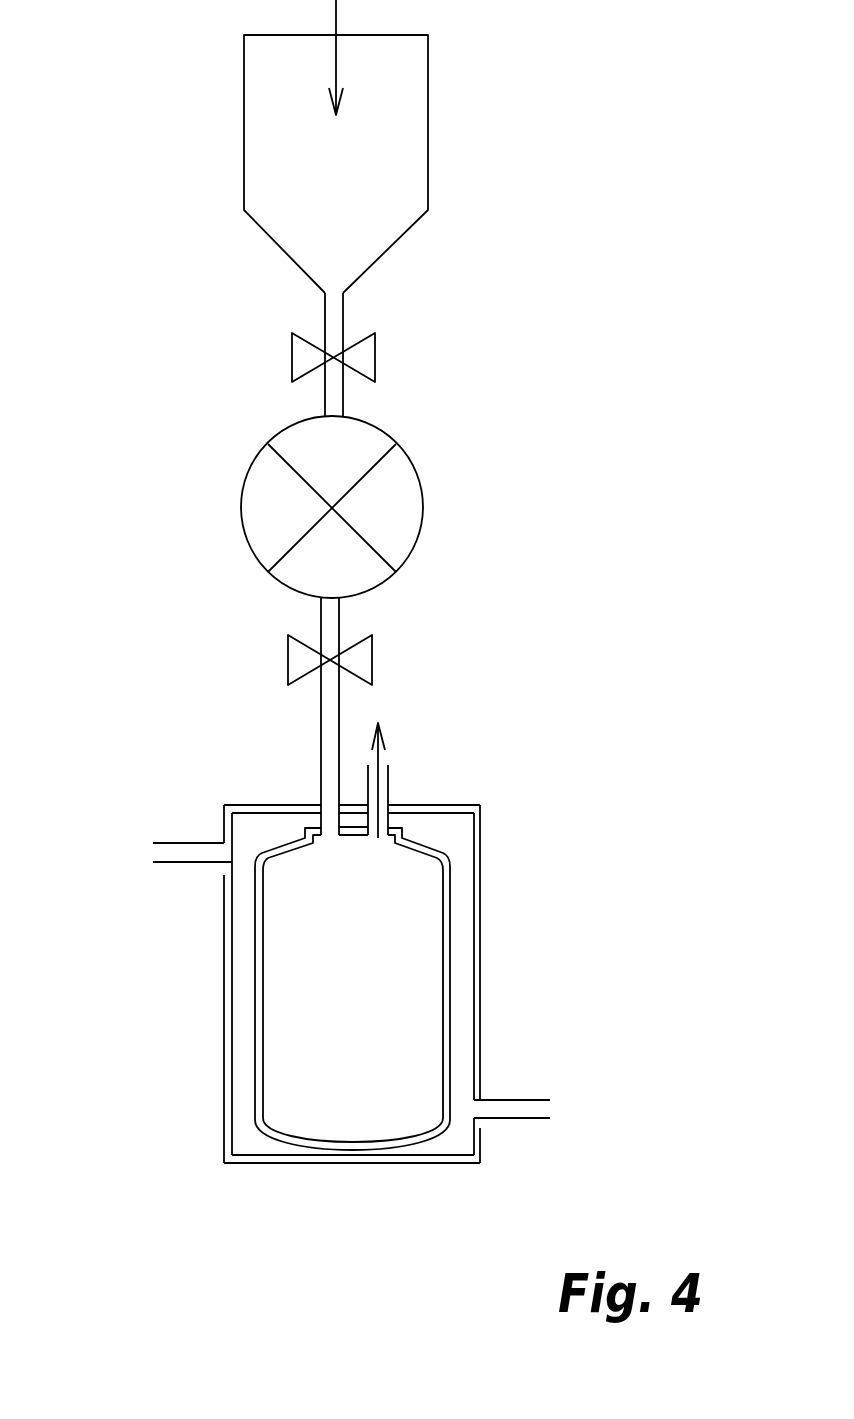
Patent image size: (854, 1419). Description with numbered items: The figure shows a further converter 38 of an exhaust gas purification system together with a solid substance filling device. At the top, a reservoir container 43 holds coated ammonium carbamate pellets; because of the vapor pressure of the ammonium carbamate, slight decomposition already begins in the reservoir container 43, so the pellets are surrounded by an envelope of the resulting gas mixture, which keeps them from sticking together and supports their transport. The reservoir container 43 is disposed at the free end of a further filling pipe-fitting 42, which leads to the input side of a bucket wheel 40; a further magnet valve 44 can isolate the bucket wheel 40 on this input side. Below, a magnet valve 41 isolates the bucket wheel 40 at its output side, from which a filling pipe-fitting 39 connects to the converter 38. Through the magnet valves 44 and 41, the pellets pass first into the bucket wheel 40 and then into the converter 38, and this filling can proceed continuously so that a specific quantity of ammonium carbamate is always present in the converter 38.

The converter 38 is at (224, 985).
The filling pipe-fitting 39 is at (321, 745).
The bucket wheel 40 is at (240, 500).
The magnet valve 41 is at (372, 660).
The further filling pipe-fitting 42 is at (325, 317).
The reservoir container 43 is at (244, 107).
The further magnet valve 44 is at (377, 359).